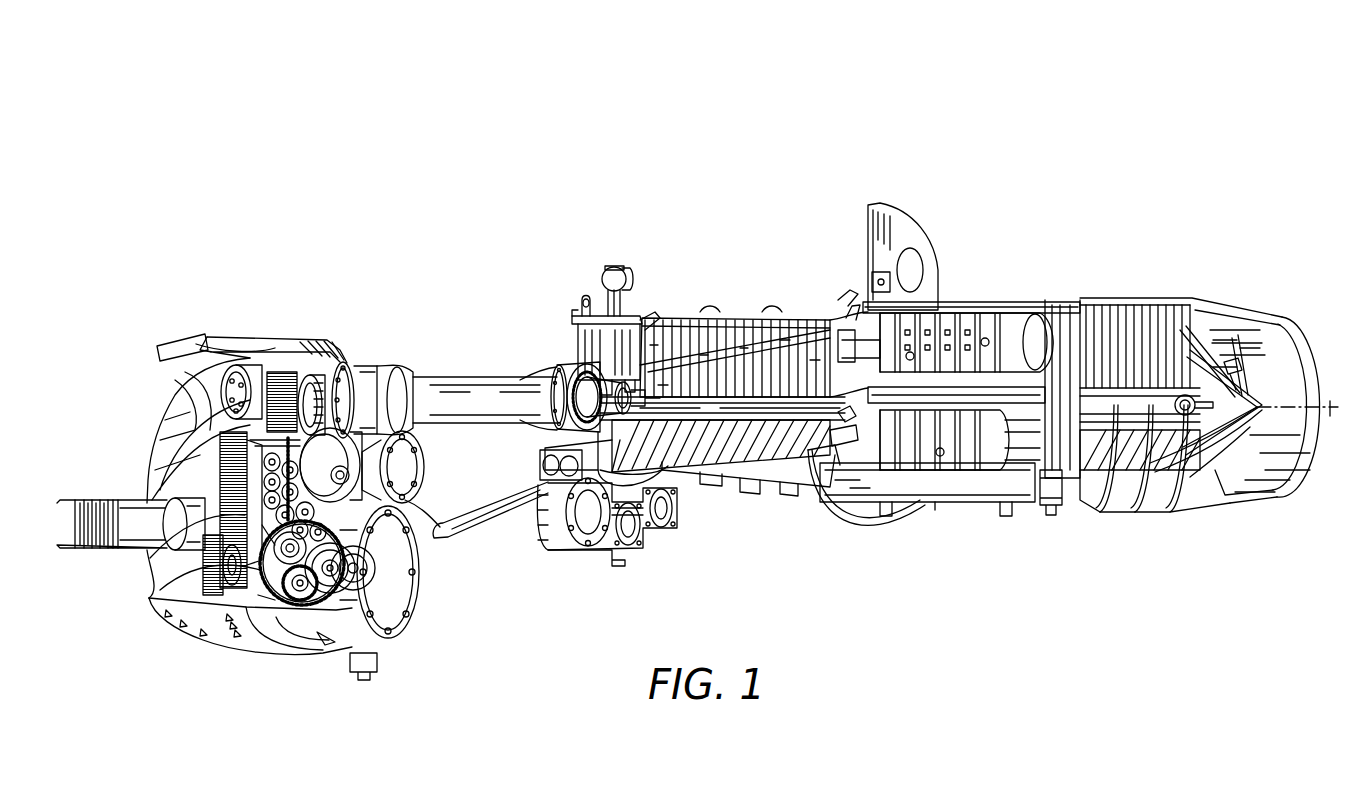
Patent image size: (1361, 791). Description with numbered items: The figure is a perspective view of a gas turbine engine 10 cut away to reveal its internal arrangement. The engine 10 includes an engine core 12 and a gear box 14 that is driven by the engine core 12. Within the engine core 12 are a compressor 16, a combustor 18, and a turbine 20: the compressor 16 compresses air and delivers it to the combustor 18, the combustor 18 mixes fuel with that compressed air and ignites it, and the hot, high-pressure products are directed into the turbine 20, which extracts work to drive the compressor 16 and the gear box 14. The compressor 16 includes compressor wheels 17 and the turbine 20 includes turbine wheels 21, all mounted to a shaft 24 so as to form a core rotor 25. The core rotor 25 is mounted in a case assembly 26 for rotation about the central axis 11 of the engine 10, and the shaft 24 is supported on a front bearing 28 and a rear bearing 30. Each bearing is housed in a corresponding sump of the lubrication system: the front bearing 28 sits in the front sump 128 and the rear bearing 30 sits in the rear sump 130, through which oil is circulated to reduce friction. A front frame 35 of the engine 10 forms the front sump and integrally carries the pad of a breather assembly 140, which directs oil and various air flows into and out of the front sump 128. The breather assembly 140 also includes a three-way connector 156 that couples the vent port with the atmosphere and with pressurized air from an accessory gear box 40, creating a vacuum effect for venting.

The gas turbine engine 10 is at (1042, 142).
The central axis 11 is at (1332, 412).
The engine core 12 is at (1010, 284).
The gear box 14 is at (297, 333).
The compressor 16 is at (735, 505).
The compressor wheels 17 is at (748, 340).
The combustor 18 is at (946, 506).
The turbine 20 is at (1106, 510).
The turbine wheels 21 is at (1158, 505).
The shaft 24 is at (866, 538).
The core rotor 25 is at (1052, 508).
The case assembly 26 is at (1179, 514).
The front bearing 28 is at (570, 375).
The rear bearing 30 is at (1192, 372).
The front frame 35 is at (652, 306).
The accessory gear box 40 is at (580, 560).
The front sump 128 is at (582, 362).
The rear sump 130 is at (1232, 372).
The breather assembly 140 is at (645, 276).
The connector 156 is at (627, 252).